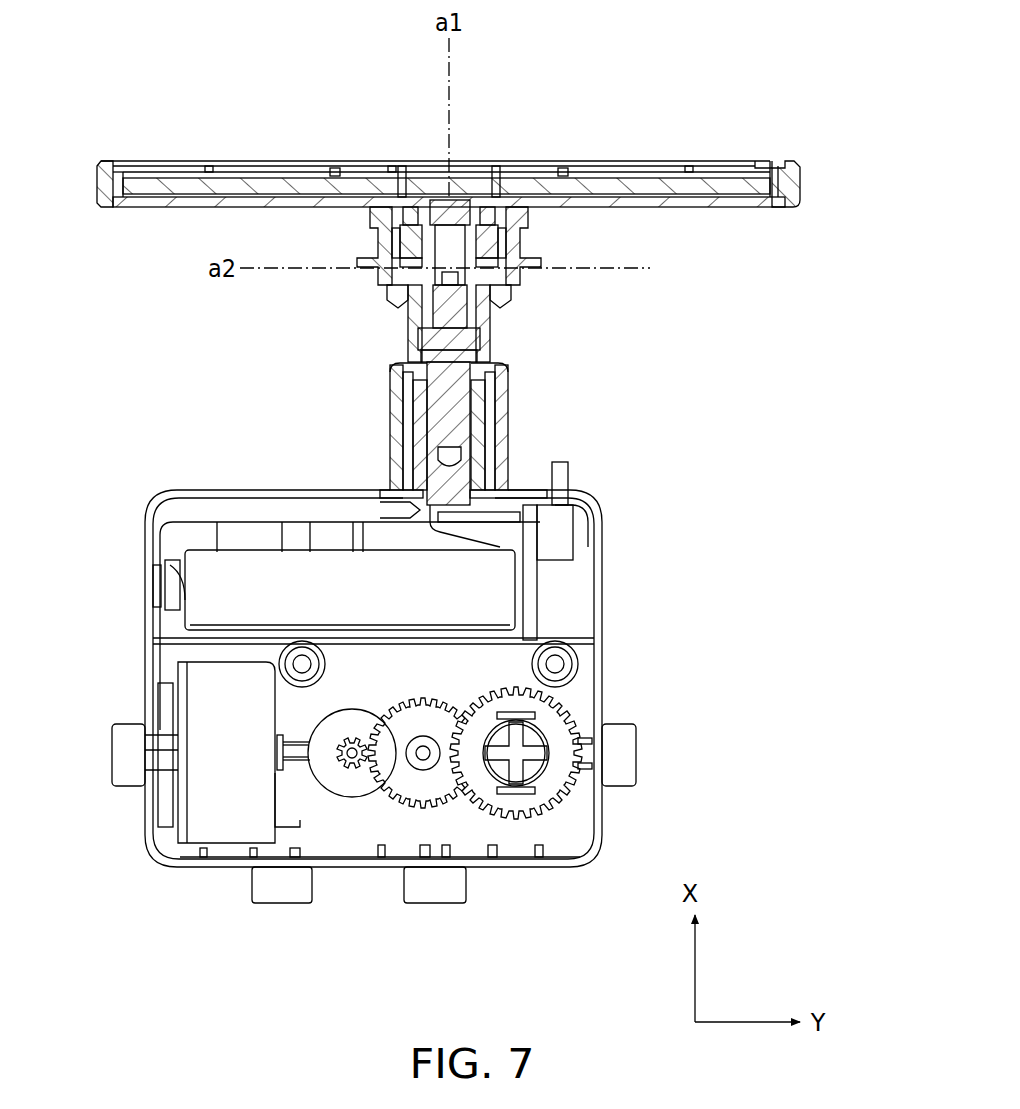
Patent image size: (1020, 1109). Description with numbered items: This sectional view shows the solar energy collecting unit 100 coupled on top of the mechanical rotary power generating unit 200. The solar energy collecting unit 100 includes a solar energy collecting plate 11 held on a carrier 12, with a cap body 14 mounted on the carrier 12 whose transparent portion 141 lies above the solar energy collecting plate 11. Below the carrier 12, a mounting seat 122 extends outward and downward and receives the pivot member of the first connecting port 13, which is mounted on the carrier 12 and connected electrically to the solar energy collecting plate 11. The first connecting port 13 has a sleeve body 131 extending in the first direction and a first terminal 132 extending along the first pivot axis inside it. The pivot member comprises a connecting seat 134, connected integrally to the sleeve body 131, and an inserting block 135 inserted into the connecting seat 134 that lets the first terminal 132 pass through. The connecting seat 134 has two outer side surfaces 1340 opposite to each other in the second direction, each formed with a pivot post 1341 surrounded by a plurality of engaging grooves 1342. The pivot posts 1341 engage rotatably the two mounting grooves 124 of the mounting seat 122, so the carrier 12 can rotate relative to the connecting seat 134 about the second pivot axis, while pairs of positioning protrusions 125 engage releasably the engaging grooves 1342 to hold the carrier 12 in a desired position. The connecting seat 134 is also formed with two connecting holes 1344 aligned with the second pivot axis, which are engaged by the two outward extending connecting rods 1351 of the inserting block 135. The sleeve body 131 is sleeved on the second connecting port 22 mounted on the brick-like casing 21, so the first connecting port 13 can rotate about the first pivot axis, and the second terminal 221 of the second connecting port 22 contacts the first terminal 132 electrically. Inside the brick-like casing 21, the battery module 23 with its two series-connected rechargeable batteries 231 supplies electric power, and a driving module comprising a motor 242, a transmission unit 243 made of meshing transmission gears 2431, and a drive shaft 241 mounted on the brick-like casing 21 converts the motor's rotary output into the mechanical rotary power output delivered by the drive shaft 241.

The solar energy collecting unit 100 is at (796, 158).
The solar energy collecting plate 11 is at (730, 170).
The carrier 12 is at (757, 205).
The first connecting port 13 is at (392, 452).
The cap body 14 is at (120, 160).
The transparent portion 141 is at (240, 160).
The mounting seat 122 is at (328, 160).
The mounting grooves 124 is at (410, 215).
The positioning protrusions 125 is at (402, 163).
The inserting block 135 is at (428, 165).
The connecting seat 134 is at (490, 305).
The outer side surfaces 1340 is at (392, 245).
The pivot post 1341 is at (380, 270).
The engaging grooves 1342 is at (415, 335).
The connecting holes 1344 is at (382, 284).
The connecting rods 1351 is at (392, 303).
The sleeve body 131 is at (510, 411).
The first terminal 132 is at (440, 396).
The second connecting port 22 is at (506, 449).
The second terminal 221 is at (472, 399).
The mechanical rotary power generating unit 200 is at (617, 658).
The brick-like casing 21 is at (143, 529).
The battery module 23 is at (160, 601).
The rechargeable batteries 231 is at (207, 573).
The motor 242 is at (212, 803).
The transmission unit 243 is at (577, 706).
The transmission gear 2431 is at (482, 797).
The drive shaft 241 is at (595, 791).